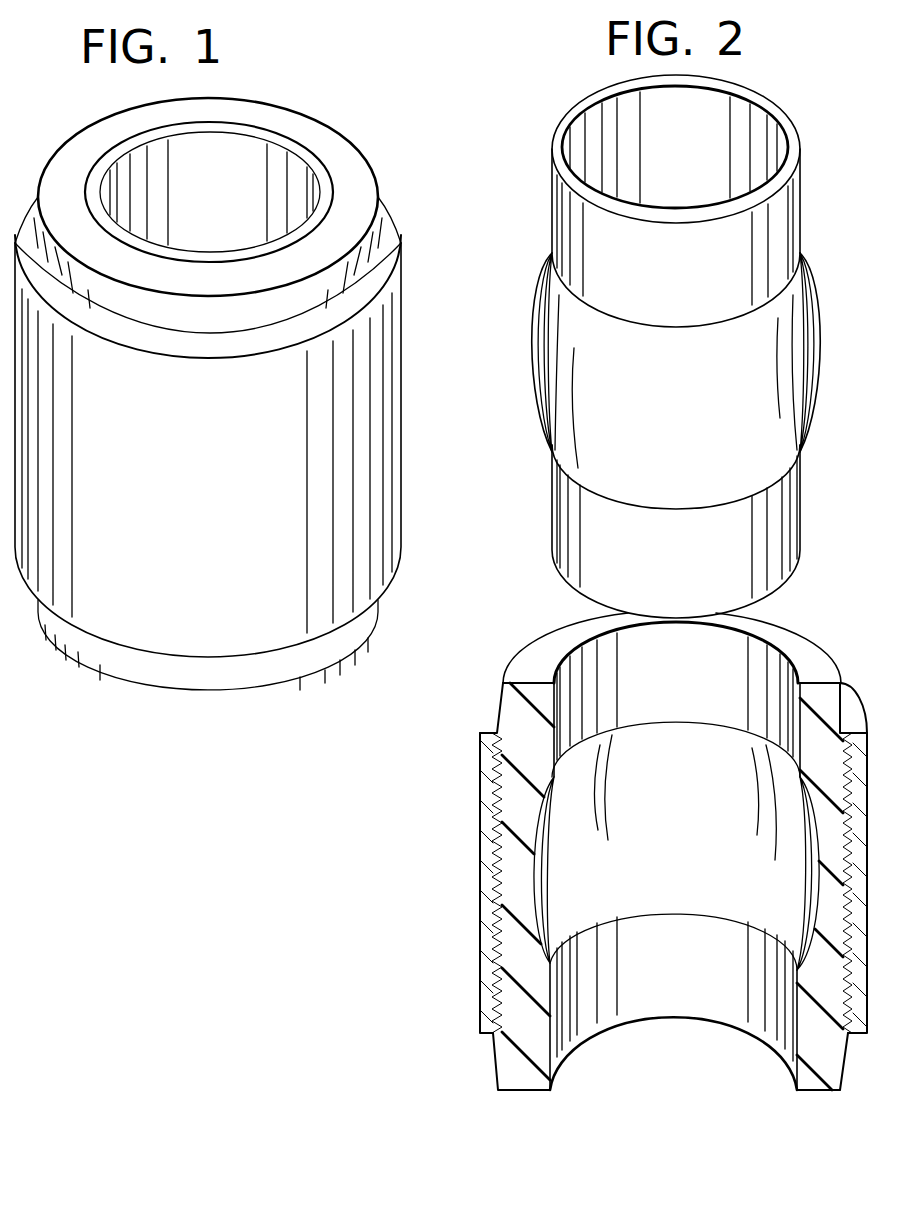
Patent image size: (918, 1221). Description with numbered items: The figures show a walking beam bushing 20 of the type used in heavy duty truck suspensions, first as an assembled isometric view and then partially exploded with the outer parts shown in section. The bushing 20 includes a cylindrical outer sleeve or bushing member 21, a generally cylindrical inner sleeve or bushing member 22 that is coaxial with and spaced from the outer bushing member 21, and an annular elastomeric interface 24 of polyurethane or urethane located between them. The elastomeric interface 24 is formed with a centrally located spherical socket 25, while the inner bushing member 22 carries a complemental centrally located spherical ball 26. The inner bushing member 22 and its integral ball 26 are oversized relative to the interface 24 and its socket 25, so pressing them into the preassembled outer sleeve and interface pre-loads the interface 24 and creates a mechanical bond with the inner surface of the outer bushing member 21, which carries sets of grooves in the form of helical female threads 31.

In FIG. 1, the walking beam bushing 20 is at (238, 408).
In FIG. 2, the walking beam bushing 20 is at (625, 612).
In FIG. 1, the cylindrical outer sleeve or bushing member 21 is at (377, 412).
In FIG. 2, the cylindrical outer sleeve or bushing member 21 is at (625, 858).
In FIG. 1, the inner sleeve or bushing member 22 is at (240, 157).
In FIG. 2, the inner sleeve or bushing member 22 is at (671, 346).
In FIG. 1, the annular elastomeric interface 24 is at (320, 143).
In FIG. 2, the annular elastomeric interface 24 is at (550, 628).
In FIG. 2, the spherical socket 25 is at (563, 850).
In FIG. 2, the spherical ball 26 is at (550, 327).
In FIG. 2, the helical female threads 31 is at (485, 727).